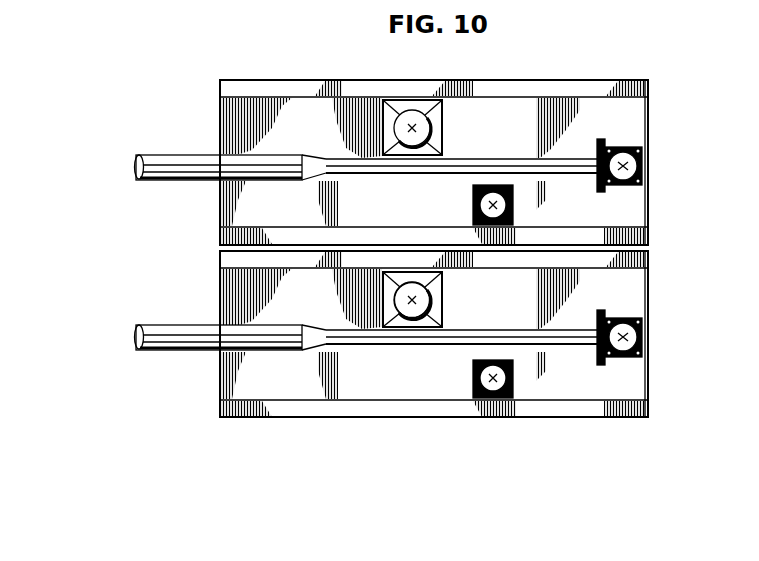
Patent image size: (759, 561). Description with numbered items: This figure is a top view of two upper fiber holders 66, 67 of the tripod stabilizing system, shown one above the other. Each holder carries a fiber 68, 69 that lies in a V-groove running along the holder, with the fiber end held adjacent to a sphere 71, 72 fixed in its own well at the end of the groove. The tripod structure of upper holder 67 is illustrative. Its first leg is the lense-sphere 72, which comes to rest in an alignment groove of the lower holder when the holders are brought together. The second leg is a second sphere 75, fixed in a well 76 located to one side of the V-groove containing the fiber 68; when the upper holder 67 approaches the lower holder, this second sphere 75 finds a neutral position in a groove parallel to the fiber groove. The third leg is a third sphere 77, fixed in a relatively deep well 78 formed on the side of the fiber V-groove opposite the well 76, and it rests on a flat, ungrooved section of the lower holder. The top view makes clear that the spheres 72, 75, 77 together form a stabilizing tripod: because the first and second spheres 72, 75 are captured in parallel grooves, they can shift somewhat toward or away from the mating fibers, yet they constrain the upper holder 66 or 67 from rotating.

The upper holder 66 is at (649, 117).
The upper holder 67 is at (649, 374).
The fiber 68 is at (173, 330).
The fiber 69 is at (168, 156).
The sphere 71 is at (643, 167).
The lense-sphere 72 is at (643, 338).
The second sphere 75 is at (461, 360).
The well 76 is at (472, 378).
The third sphere 77 is at (383, 300).
The well 78 is at (444, 128).